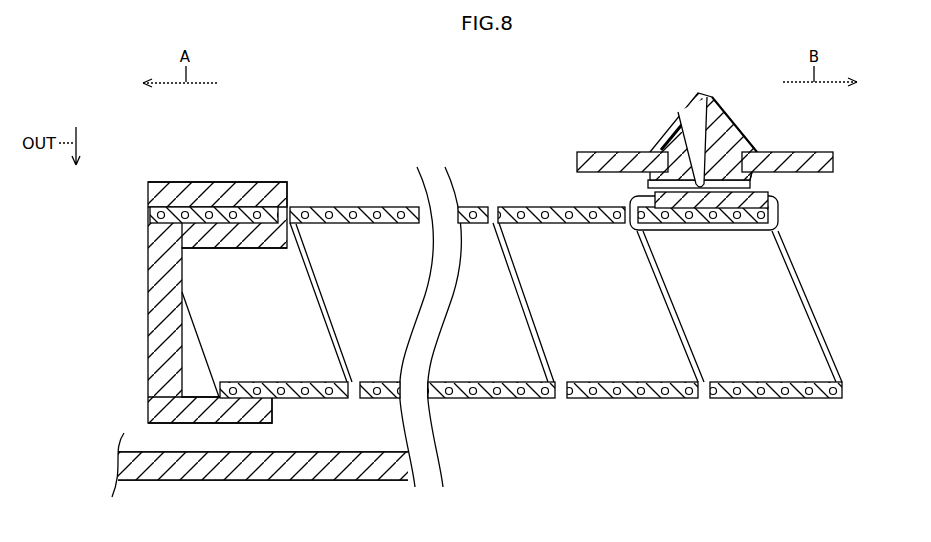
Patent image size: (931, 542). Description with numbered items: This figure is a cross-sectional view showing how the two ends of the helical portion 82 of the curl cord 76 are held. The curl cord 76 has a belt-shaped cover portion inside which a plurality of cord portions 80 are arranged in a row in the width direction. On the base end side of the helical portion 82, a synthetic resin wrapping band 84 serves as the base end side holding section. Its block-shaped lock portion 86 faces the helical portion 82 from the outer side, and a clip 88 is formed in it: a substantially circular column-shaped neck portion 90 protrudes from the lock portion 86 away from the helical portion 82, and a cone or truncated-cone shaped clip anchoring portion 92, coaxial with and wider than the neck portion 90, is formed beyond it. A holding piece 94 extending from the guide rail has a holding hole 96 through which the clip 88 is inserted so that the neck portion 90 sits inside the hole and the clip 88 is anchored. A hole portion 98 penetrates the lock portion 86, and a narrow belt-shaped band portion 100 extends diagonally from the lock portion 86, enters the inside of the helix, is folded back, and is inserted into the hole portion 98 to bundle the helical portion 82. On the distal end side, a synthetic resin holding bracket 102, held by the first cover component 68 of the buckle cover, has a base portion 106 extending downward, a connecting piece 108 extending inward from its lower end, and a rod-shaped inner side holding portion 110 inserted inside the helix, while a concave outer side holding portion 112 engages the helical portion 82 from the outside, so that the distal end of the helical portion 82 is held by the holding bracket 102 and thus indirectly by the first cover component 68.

The first cover component 68 is at (285, 481).
The curl cord 76 is at (530, 400).
The cord portions 80 is at (238, 385).
The helical portion 82 is at (600, 400).
The wrapping band 84 is at (792, 216).
The lock portion 86 is at (645, 177).
The clip 88 is at (816, 104).
The neck portion 90 is at (771, 150).
The clip anchoring portion 92 is at (738, 124).
The holding piece 94 is at (808, 173).
The holding hole 96 is at (683, 160).
The hole portion 98 is at (714, 120).
The band portion 100 is at (692, 232).
The holding bracket 102 is at (288, 183).
The base portion 106 is at (273, 418).
The connecting piece 108 is at (185, 352).
The inner side holding portion 110 is at (222, 249).
The outer side holding portion 112 is at (203, 181).